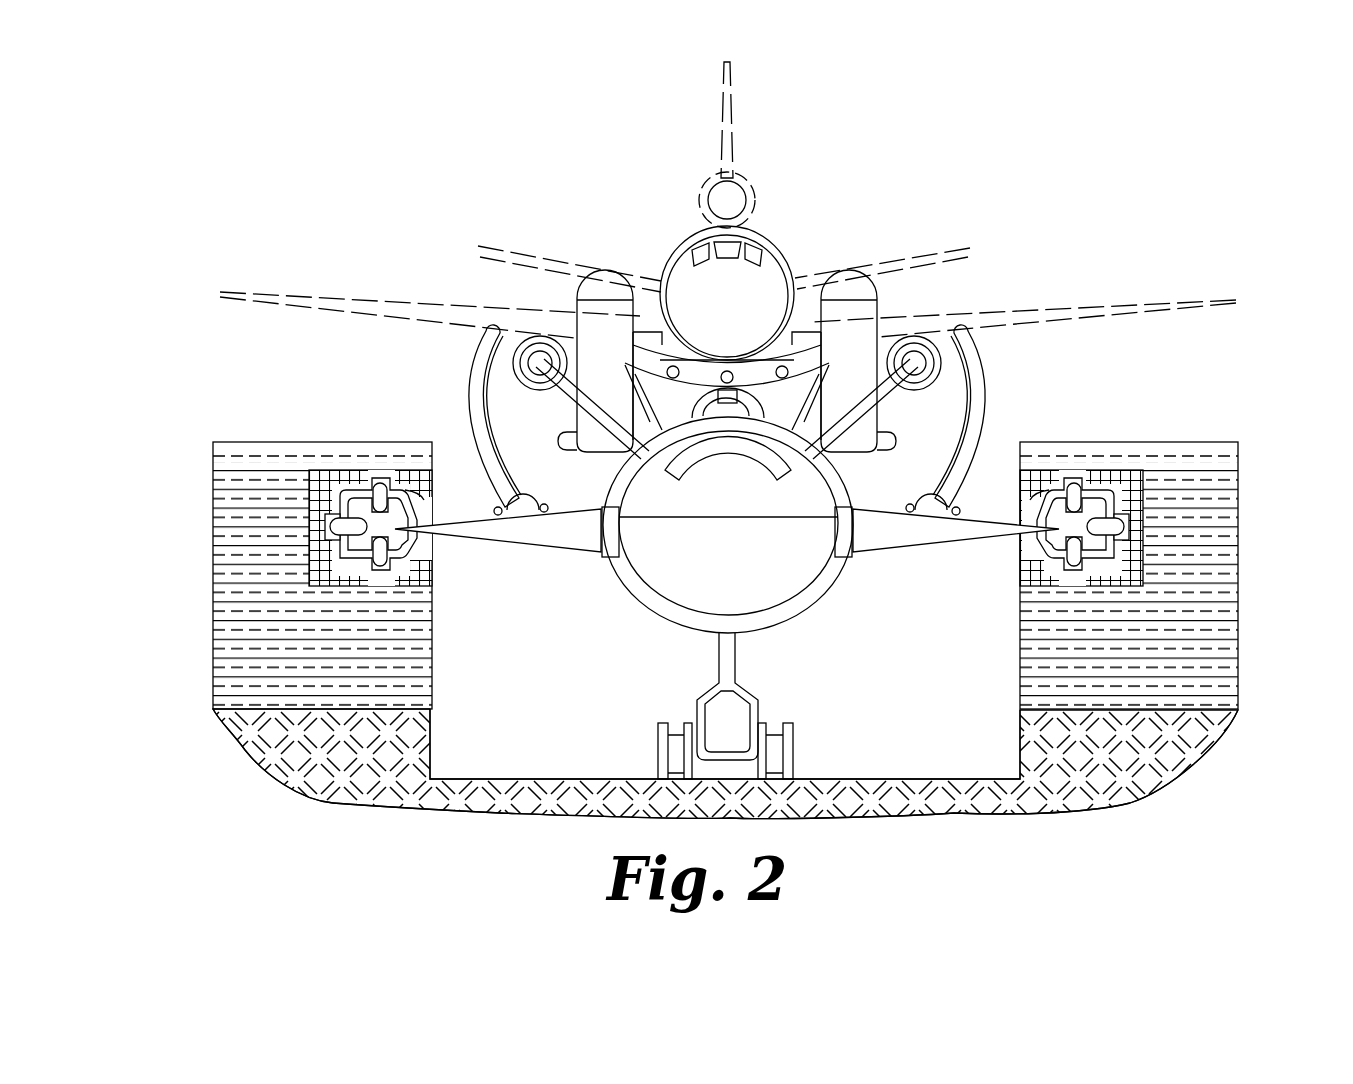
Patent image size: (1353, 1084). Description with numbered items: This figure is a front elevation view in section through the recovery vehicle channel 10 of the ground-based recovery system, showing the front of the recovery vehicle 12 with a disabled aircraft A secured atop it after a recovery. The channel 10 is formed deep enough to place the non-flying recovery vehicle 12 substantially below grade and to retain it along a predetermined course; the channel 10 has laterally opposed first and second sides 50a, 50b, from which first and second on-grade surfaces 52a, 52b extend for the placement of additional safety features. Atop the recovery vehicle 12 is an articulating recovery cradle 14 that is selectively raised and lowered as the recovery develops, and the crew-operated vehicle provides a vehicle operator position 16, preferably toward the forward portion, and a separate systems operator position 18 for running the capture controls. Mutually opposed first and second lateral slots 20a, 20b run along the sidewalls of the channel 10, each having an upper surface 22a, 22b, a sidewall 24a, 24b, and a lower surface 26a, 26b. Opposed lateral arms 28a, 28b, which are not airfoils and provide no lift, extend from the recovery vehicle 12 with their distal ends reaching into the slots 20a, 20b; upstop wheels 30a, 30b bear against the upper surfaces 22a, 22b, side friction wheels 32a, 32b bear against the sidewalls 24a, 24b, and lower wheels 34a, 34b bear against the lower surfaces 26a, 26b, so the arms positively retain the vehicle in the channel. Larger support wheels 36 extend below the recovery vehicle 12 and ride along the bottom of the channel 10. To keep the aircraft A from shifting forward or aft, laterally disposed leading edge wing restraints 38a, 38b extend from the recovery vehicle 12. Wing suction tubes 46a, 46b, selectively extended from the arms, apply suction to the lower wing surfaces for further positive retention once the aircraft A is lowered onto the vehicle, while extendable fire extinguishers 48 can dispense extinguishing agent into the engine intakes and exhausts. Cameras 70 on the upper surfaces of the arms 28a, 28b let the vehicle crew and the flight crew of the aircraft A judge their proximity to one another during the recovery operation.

The disabled aircraft A is at (728, 257).
The channel 10 is at (490, 728).
The recovery vehicle 12 is at (806, 601).
The recovery cradle 14 is at (696, 380).
The vehicle operator position 16 is at (690, 481).
The systems operator position 18 is at (728, 403).
The first lateral slot 20a is at (507, 566).
The second lateral slot 20b is at (947, 566).
The upper surface of first slot 22a is at (414, 493).
The upper surface of second slot 22b is at (1030, 495).
The sidewall of first slot 24a is at (348, 490).
The sidewall of second slot 24b is at (1092, 490).
The lower surface of first slot 26a is at (418, 555).
The lower surface of second slot 26b is at (1026, 560).
The first lateral arm 28a is at (445, 551).
The second lateral arm 28b is at (1009, 557).
The first upstop wheel 30a is at (381, 484).
The second upstop wheel 30b is at (1073, 484).
The first side friction wheel 32a is at (332, 526).
The second side friction wheel 32b is at (1124, 526).
The first lower wheel 34a is at (383, 566).
The second lower wheel 34b is at (1070, 570).
The support wheels 36 is at (657, 745).
The first leading edge wing restraint 38a is at (600, 302).
The second leading edge wing restraint 38b is at (877, 308).
The first wing suction tube 46a is at (480, 352).
The second wing suction tube 46b is at (987, 357).
The fire extinguishers 48 is at (538, 391).
The first side of channel 50a is at (432, 443).
The second side of channel 50b is at (1022, 455).
The first surface 52a is at (262, 441).
The second surface 52b is at (1192, 442).
The cameras 70 is at (528, 498).